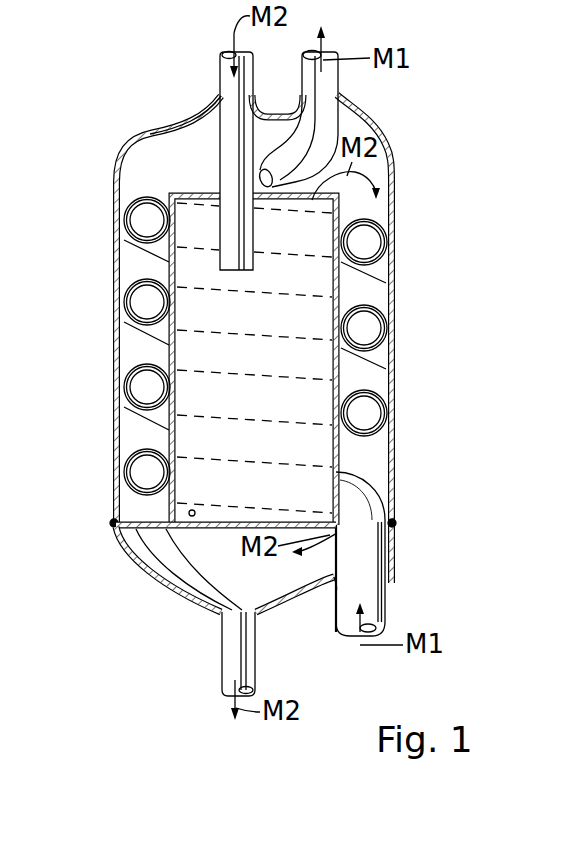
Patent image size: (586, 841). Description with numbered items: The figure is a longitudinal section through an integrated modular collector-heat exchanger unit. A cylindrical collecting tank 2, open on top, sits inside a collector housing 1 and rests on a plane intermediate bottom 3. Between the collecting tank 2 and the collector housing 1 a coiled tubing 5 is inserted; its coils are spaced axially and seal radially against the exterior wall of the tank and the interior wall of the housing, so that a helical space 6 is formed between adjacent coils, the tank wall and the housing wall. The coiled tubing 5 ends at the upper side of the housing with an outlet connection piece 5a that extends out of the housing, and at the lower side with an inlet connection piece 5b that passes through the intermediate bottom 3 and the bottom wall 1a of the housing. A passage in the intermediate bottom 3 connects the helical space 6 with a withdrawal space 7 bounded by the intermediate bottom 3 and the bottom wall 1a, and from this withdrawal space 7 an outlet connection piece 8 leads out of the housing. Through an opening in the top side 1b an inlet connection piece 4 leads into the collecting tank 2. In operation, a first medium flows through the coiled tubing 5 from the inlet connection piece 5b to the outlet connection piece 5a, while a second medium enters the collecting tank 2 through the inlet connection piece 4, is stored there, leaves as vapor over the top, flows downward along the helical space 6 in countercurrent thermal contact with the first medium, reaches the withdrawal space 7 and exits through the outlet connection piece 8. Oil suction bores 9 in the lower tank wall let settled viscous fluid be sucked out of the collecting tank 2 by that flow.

The collector housing 1 is at (118, 360).
The bottom wall 1a is at (312, 592).
The top side 1b is at (170, 128).
The collecting tank 2 is at (335, 366).
The intermediate bottom 3 is at (117, 530).
The inlet connection piece 4 is at (222, 92).
The coiled tubing 5 is at (366, 332).
The outlet connection piece 5a is at (330, 88).
The inlet connection piece 5b is at (378, 600).
The helical space 6 is at (137, 345).
The withdrawal space 7 is at (254, 588).
The outlet connection piece 8 is at (222, 688).
The oil suction bores 9 is at (194, 510).